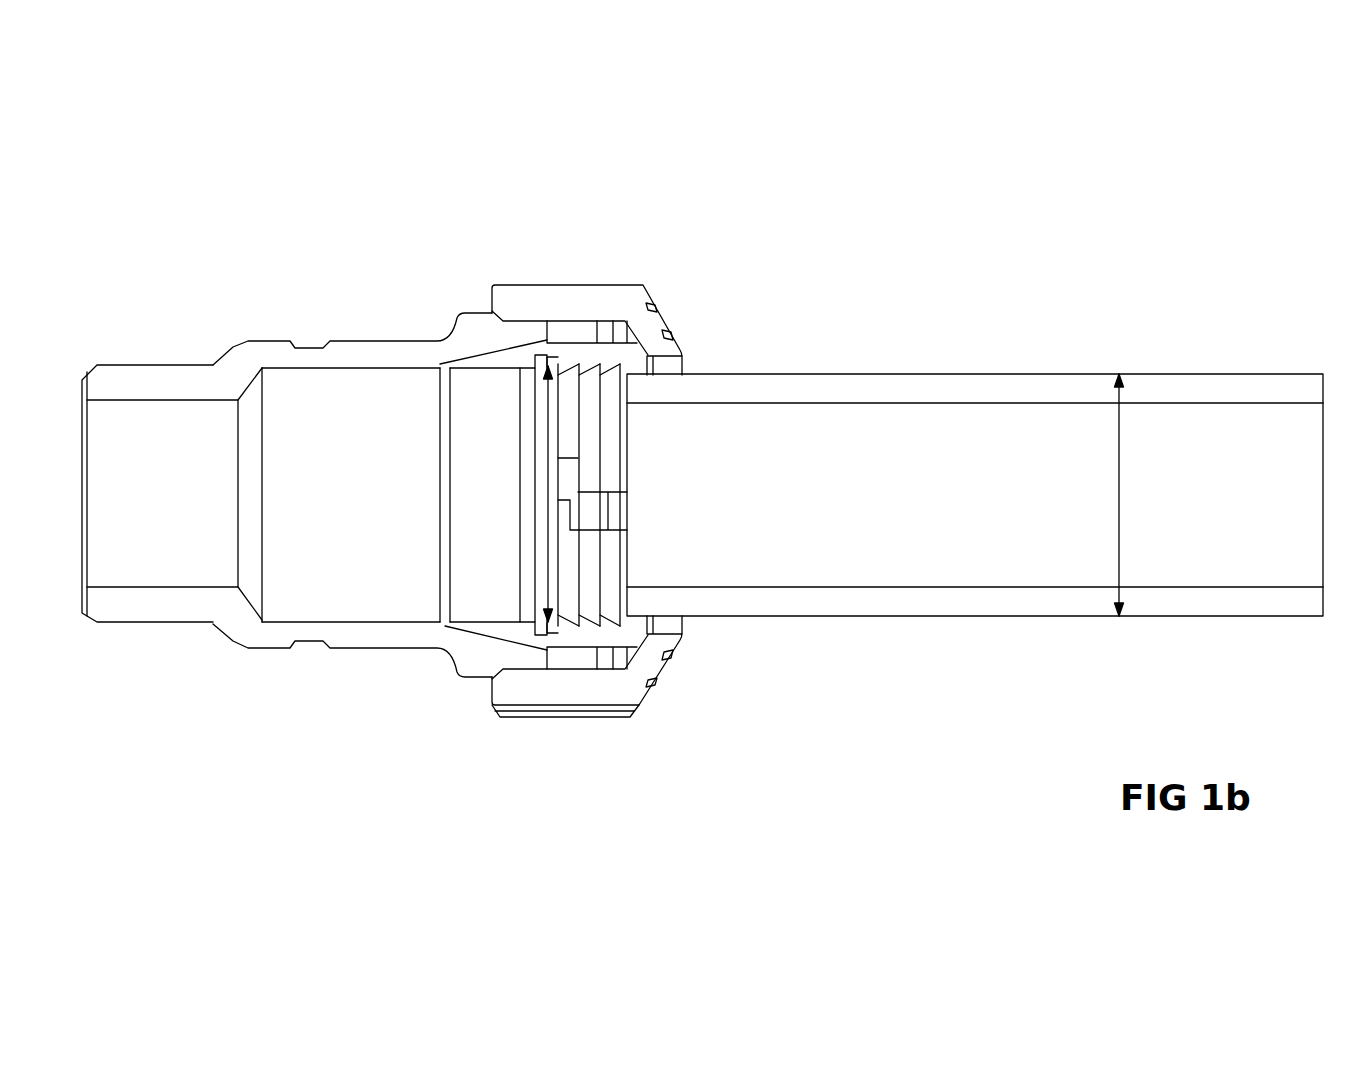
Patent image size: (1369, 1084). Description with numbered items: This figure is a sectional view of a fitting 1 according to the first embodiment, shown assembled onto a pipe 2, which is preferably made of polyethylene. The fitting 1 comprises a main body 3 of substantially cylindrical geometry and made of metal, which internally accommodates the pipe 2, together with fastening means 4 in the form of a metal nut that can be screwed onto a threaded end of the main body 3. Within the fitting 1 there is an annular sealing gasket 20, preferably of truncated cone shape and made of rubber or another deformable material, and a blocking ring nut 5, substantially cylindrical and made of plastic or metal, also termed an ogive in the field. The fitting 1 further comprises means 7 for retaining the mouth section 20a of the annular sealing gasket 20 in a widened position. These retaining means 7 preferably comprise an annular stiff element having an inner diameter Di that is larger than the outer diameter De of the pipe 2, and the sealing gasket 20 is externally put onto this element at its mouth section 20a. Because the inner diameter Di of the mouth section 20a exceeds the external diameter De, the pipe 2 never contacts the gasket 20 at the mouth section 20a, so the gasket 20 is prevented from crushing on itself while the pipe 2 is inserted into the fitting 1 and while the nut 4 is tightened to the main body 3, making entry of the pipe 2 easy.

The fitting 1 is at (443, 254).
The pipe 2 is at (930, 378).
The main body 3 is at (149, 360).
The fastening means 4 is at (650, 290).
The blocking ring nut 5 is at (598, 634).
The retaining means 7 is at (553, 357).
The annular sealing gasket 20 is at (501, 636).
The mouth section 20a is at (550, 641).
The inner diameter Di is at (547, 490).
The external diameter De is at (1119, 472).